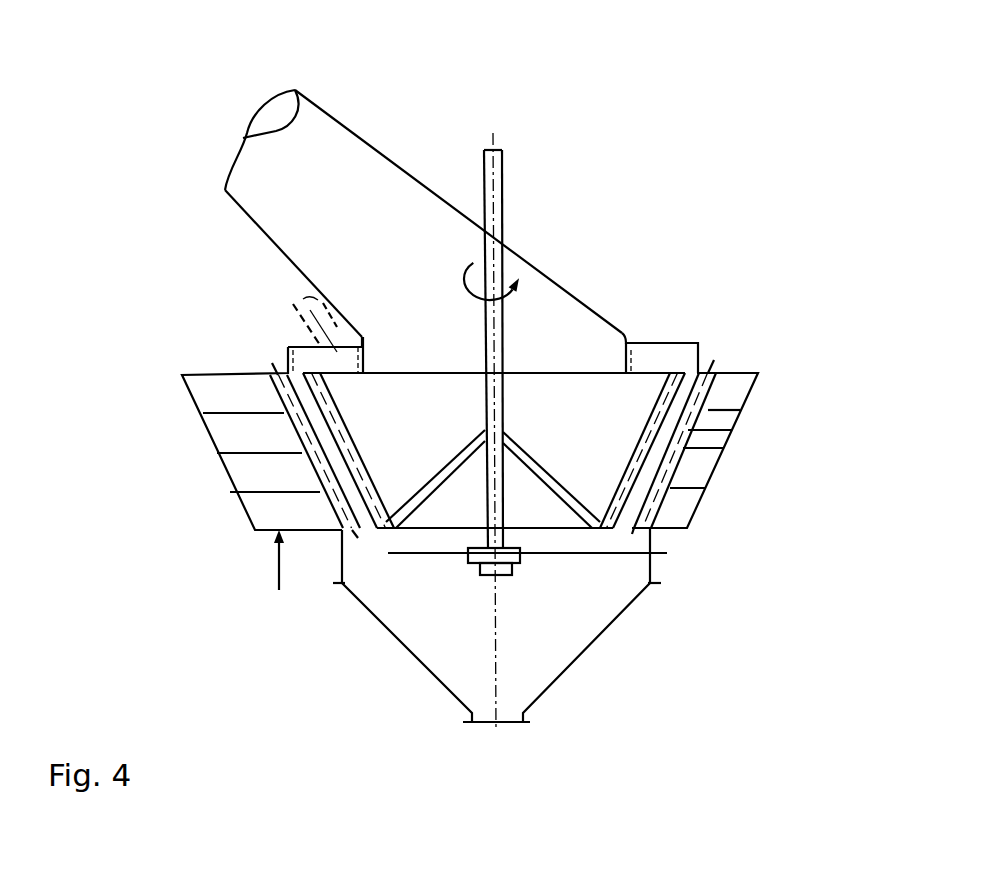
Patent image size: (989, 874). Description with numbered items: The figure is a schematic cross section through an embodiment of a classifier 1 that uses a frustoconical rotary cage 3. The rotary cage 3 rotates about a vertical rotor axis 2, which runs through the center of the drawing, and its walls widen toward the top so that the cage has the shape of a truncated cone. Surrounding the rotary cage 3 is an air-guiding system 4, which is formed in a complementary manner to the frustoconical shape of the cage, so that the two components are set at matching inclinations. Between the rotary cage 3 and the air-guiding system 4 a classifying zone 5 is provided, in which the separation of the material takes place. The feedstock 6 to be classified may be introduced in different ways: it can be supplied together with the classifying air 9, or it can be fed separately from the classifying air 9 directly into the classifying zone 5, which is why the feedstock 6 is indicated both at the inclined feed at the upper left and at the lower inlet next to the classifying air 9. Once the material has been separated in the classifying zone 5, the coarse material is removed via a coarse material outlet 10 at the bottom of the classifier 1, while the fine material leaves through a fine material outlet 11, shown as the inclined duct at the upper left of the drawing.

The classifier 1 is at (762, 233).
The vertical rotor axis 2 is at (497, 387).
The frustoconical rotary cage 3 is at (650, 432).
The air-guiding system 4 is at (670, 463).
The classifying zone 5 is at (328, 442).
The feedstock 6 is at (233, 275).
The classifying air 9 is at (278, 504).
The coarse material outlet 10 is at (508, 725).
The fine material outlet 11 is at (273, 112).